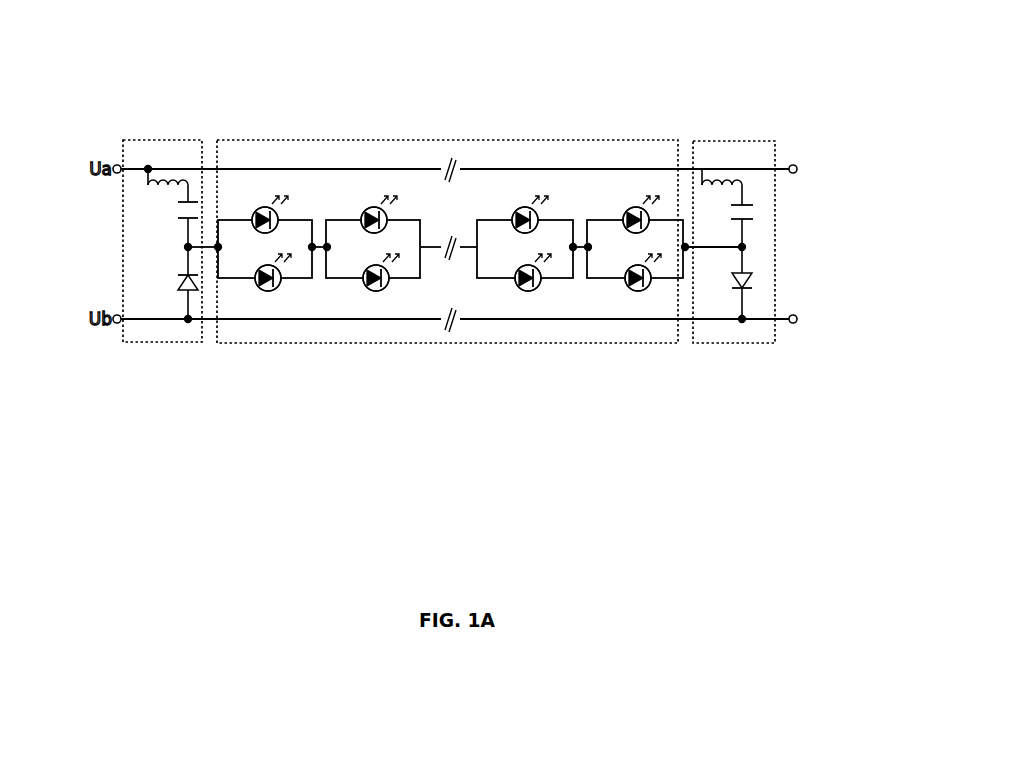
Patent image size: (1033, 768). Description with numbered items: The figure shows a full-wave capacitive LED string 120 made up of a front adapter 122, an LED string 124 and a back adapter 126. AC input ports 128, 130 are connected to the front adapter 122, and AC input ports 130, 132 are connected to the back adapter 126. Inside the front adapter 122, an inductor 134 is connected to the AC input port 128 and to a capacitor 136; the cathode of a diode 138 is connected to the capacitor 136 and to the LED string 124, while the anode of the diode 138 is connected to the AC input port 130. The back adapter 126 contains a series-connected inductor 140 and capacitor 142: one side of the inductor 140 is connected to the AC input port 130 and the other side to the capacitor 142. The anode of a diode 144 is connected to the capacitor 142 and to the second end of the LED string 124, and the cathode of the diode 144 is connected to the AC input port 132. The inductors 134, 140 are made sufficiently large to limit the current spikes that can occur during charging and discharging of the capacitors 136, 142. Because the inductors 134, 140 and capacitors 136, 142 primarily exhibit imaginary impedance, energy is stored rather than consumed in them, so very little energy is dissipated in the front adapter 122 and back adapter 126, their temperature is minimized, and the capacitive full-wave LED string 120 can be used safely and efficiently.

The full-wave capacitive LED string 120 is at (772, 408).
The front adapter 122 is at (164, 137).
The LED string 124 is at (420, 137).
The back adapter 126 is at (727, 137).
The AC input port 128 is at (113, 162).
The AC input port 130 is at (85, 392).
The AC input port 132 is at (793, 330).
The inductor 134 is at (168, 193).
The capacitor 136 is at (177, 227).
The diode 138 is at (170, 277).
The inductor 140 is at (745, 181).
The capacitor 142 is at (760, 210).
The diode 144 is at (760, 282).